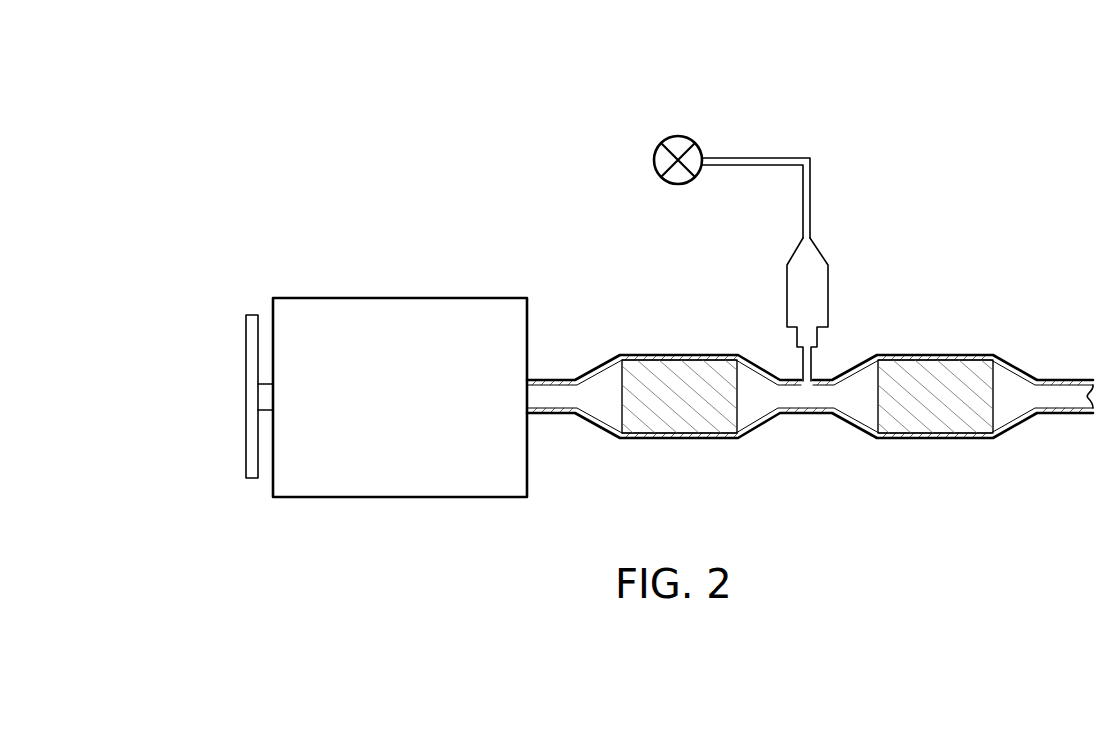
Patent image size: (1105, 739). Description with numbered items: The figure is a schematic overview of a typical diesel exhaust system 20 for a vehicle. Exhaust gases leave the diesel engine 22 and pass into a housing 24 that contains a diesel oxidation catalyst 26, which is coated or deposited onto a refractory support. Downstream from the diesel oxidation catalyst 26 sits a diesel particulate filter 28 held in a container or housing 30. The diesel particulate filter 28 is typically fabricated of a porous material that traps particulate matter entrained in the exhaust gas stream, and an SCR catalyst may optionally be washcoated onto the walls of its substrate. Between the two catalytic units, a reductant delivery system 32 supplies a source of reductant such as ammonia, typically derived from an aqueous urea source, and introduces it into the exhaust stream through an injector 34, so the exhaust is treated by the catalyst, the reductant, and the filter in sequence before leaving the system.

The diesel exhaust system 20 is at (1027, 150).
The diesel engine 22 is at (393, 297).
The housing 24 is at (598, 365).
The diesel oxidation catalyst 26 is at (675, 423).
The diesel particulate filter 28 is at (933, 422).
The housing 30 is at (1022, 366).
The reductant delivery system 32 is at (840, 167).
The injector 34 is at (818, 362).